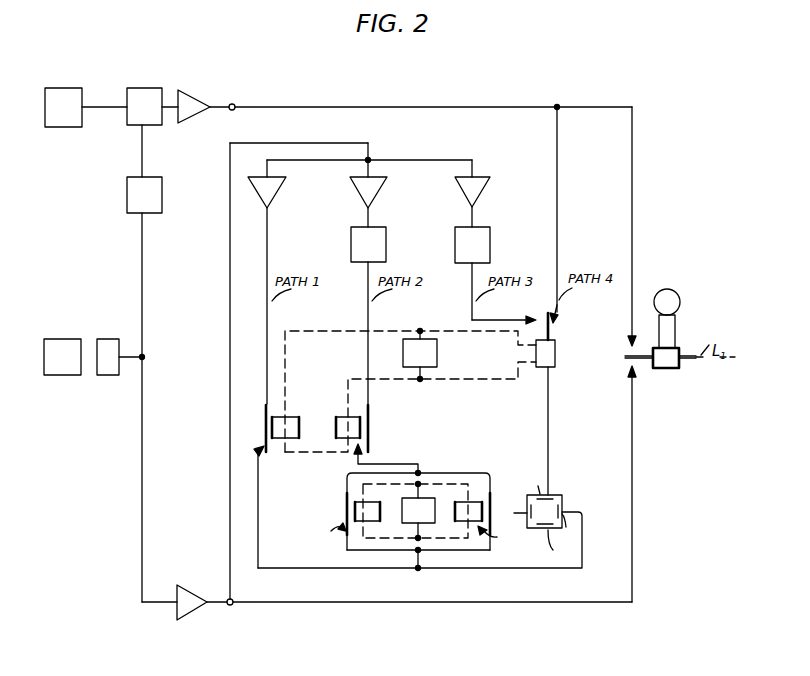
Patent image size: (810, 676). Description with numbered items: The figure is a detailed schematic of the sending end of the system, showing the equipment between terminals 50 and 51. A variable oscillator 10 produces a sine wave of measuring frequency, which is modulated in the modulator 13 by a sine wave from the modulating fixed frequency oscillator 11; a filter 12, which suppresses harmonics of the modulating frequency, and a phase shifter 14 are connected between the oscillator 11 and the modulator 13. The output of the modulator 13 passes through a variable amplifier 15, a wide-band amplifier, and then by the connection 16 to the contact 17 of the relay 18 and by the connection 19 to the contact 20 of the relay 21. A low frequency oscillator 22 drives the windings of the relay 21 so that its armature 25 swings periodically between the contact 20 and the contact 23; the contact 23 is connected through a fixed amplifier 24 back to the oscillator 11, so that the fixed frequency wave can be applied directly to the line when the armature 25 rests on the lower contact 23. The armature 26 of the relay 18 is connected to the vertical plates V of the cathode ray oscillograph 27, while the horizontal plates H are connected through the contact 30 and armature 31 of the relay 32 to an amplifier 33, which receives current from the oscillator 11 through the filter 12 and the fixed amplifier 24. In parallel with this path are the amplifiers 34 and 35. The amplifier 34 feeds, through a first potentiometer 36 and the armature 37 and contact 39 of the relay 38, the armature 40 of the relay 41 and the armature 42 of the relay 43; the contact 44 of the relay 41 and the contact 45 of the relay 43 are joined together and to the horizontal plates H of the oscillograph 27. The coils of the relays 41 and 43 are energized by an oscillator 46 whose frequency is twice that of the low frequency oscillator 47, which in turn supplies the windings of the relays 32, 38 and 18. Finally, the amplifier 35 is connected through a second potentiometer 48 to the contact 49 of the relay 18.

The variable oscillator 10 is at (61, 89).
The modulating fixed frequency oscillator 11 is at (73, 373).
The filter 12 is at (110, 374).
The modulator 13 is at (143, 89).
The phase shifter 14 is at (127, 195).
The variable amplifier 15 is at (186, 93).
The connection 16 is at (557, 175).
The contact 17 is at (562, 321).
The relay 18 is at (553, 354).
The connection 19 is at (633, 176).
The contact 20 is at (628, 344).
The relay 21 is at (669, 368).
The oscillator 22 is at (681, 308).
The contact 23 is at (634, 379).
The fixed amplifier 24 is at (196, 597).
The armature 25 is at (627, 357).
The armature 26 is at (556, 339).
The cathode ray oscillograph 27 is at (561, 503).
The contact 30 is at (250, 507).
The armature 31 is at (264, 409).
The relay 32 is at (290, 418).
The amplifier 33 is at (274, 200).
The amplifier 34 is at (375, 200).
The amplifier 35 is at (480, 200).
The first potentiometer 36 is at (386, 250).
The armature 37 is at (371, 418).
The relay 38 is at (349, 418).
The contact 39 is at (355, 461).
The armature 40 is at (346, 501).
The relay 41 is at (370, 509).
The armature 42 is at (490, 506).
The relay 43 is at (467, 505).
The contact 44 is at (329, 533).
The contact 45 is at (497, 535).
The oscillator 46 is at (427, 500).
The low frequency oscillator 47 is at (439, 353).
The second potentiometer 48 is at (490, 250).
The contact 49 is at (538, 308).
The terminal 50 is at (234, 104).
The terminal 51 is at (232, 606).